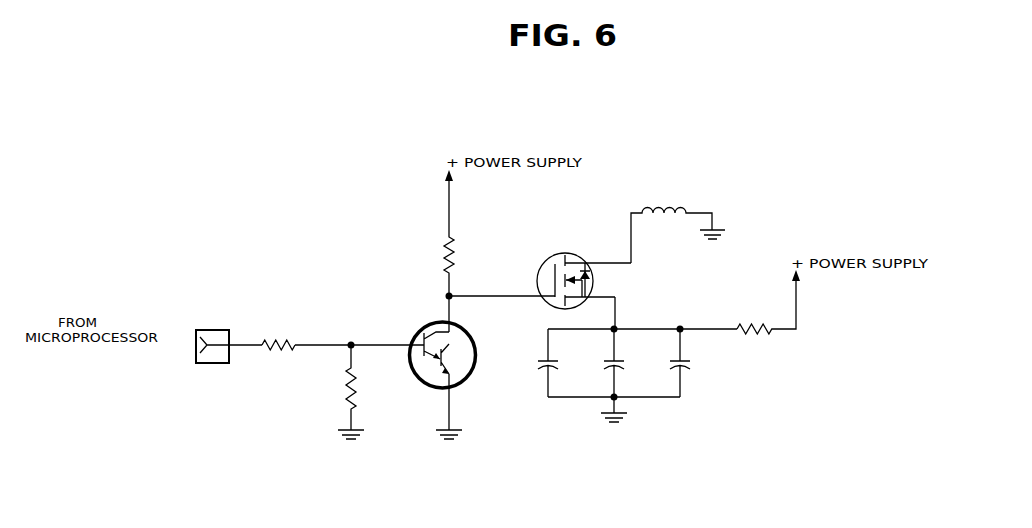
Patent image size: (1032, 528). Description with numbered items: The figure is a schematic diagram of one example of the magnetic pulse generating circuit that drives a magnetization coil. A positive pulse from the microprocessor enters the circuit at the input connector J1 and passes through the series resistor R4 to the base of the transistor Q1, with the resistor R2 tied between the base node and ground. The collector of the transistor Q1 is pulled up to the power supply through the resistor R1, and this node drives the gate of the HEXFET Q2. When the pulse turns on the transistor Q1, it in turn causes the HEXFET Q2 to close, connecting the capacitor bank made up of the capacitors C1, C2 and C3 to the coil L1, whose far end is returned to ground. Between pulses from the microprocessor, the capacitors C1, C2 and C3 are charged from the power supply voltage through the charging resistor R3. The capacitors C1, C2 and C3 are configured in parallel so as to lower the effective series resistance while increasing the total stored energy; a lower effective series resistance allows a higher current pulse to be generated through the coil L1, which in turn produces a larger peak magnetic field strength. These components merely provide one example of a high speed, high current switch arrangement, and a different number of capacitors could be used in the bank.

The input connector J1 is at (212, 336).
The resistor R4 is at (278, 332).
The resistor R2 is at (359, 392).
The transistor Q1 is at (443, 367).
The resistor R1 is at (462, 233).
The HEXFET Q2 is at (576, 265).
The coil L1 is at (678, 219).
The capacitor C1 is at (559, 363).
The capacitor C2 is at (625, 363).
The capacitor C3 is at (691, 363).
The charging resistor R3 is at (768, 302).